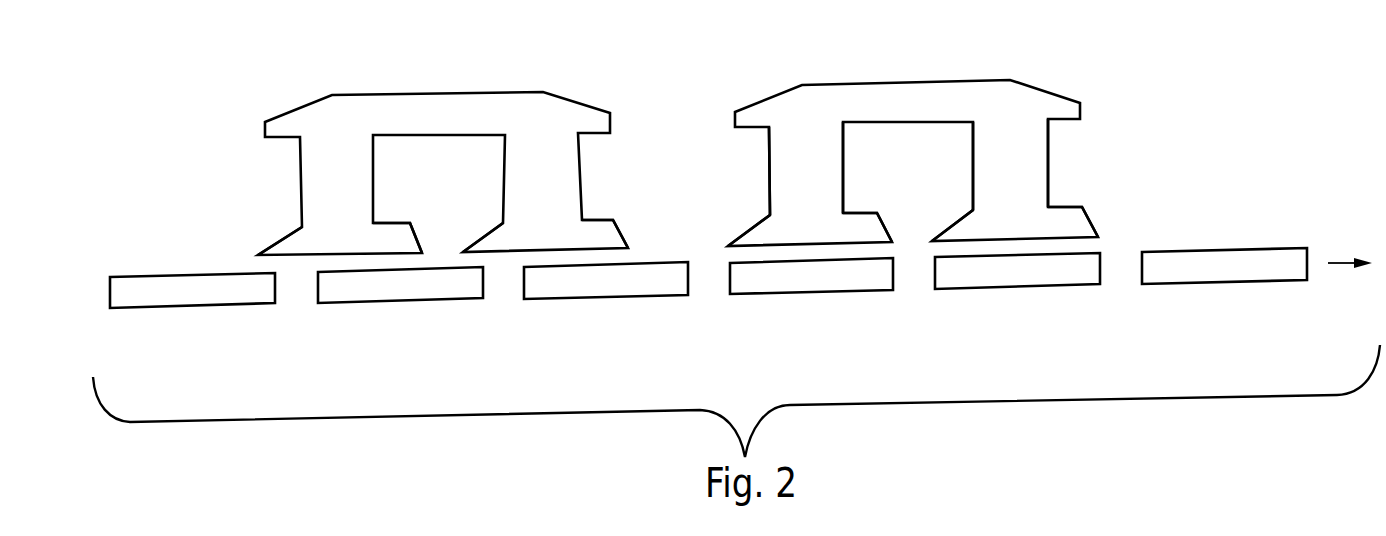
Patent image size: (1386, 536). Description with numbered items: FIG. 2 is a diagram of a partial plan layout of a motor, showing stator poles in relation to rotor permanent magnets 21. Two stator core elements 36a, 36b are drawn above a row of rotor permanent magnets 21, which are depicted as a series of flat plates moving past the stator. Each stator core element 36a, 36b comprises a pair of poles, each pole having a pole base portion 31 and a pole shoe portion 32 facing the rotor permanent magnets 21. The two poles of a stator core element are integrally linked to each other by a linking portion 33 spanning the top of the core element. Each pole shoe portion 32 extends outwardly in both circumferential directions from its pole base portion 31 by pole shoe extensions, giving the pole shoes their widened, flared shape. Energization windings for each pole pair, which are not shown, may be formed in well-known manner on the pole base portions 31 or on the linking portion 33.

The rotor permanent magnets 21 is at (252, 307).
The pole base portions 31 is at (843, 158).
The pole shoe portions 32 is at (782, 223).
The linking portion 33 is at (924, 113).
The stator core element 36a is at (410, 93).
The stator core element 36b is at (868, 83).